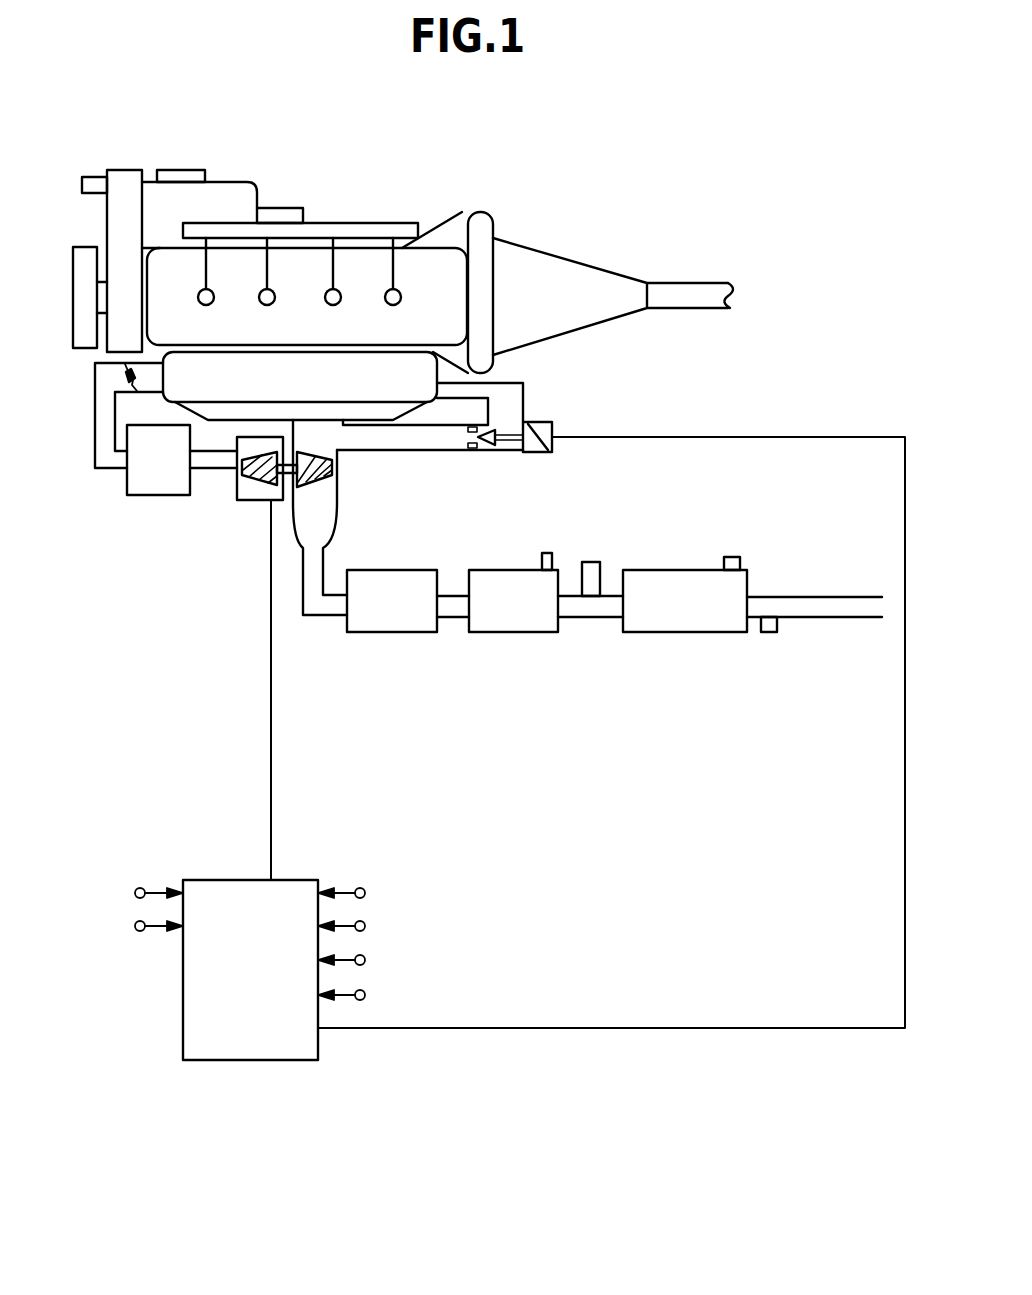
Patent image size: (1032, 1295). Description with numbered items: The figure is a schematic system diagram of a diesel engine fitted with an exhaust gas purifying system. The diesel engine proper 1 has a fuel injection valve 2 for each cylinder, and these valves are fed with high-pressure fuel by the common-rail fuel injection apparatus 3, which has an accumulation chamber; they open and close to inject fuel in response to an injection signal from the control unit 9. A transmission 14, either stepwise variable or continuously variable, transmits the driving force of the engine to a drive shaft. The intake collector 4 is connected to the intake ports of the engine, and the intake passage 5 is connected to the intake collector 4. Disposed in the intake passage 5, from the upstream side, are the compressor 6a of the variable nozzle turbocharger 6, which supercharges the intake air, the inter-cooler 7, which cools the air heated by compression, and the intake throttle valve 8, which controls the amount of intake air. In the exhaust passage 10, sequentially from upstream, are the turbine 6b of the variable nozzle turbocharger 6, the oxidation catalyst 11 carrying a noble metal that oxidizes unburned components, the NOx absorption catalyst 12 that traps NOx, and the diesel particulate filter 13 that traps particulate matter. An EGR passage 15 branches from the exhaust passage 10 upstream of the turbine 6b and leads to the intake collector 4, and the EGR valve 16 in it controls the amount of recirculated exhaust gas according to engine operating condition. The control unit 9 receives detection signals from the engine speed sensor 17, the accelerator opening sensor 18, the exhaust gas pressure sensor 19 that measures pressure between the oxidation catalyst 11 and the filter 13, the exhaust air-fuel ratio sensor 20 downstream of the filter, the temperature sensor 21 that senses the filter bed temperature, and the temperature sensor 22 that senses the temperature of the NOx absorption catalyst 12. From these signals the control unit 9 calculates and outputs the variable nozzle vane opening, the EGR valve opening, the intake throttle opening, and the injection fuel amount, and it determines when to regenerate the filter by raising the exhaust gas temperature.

The diesel engine proper 1 is at (443, 265).
The fuel injection valve 2 is at (200, 290).
The common-rail fuel injection apparatus 3 is at (405, 228).
The intake collector 4 is at (403, 392).
The intake passage 5 is at (105, 420).
The variable nozzle turbocharger 6 is at (298, 501).
The compressor 6a is at (255, 475).
The turbine 6b is at (332, 475).
The inter-cooler 7 is at (145, 497).
The intake throttle valve 8 is at (123, 370).
The control unit 9 is at (249, 1063).
The exhaust passage 10 is at (312, 557).
The oxidation catalyst 11 is at (390, 635).
The NOx absorption catalyst 12 is at (518, 635).
The diesel particulate filter 13 is at (680, 635).
The transmission 14 is at (548, 278).
The EGR passage 15 is at (453, 452).
The EGR valve 16 is at (533, 455).
The engine speed sensor 17 is at (93, 182).
The accelerator opening sensor 18 is at (141, 926).
The exhaust gas pressure sensor 19 is at (595, 561).
The exhaust air-fuel ratio sensor 20 is at (768, 633).
The temperature sensor 21 is at (733, 558).
The temperature sensor 22 is at (548, 552).